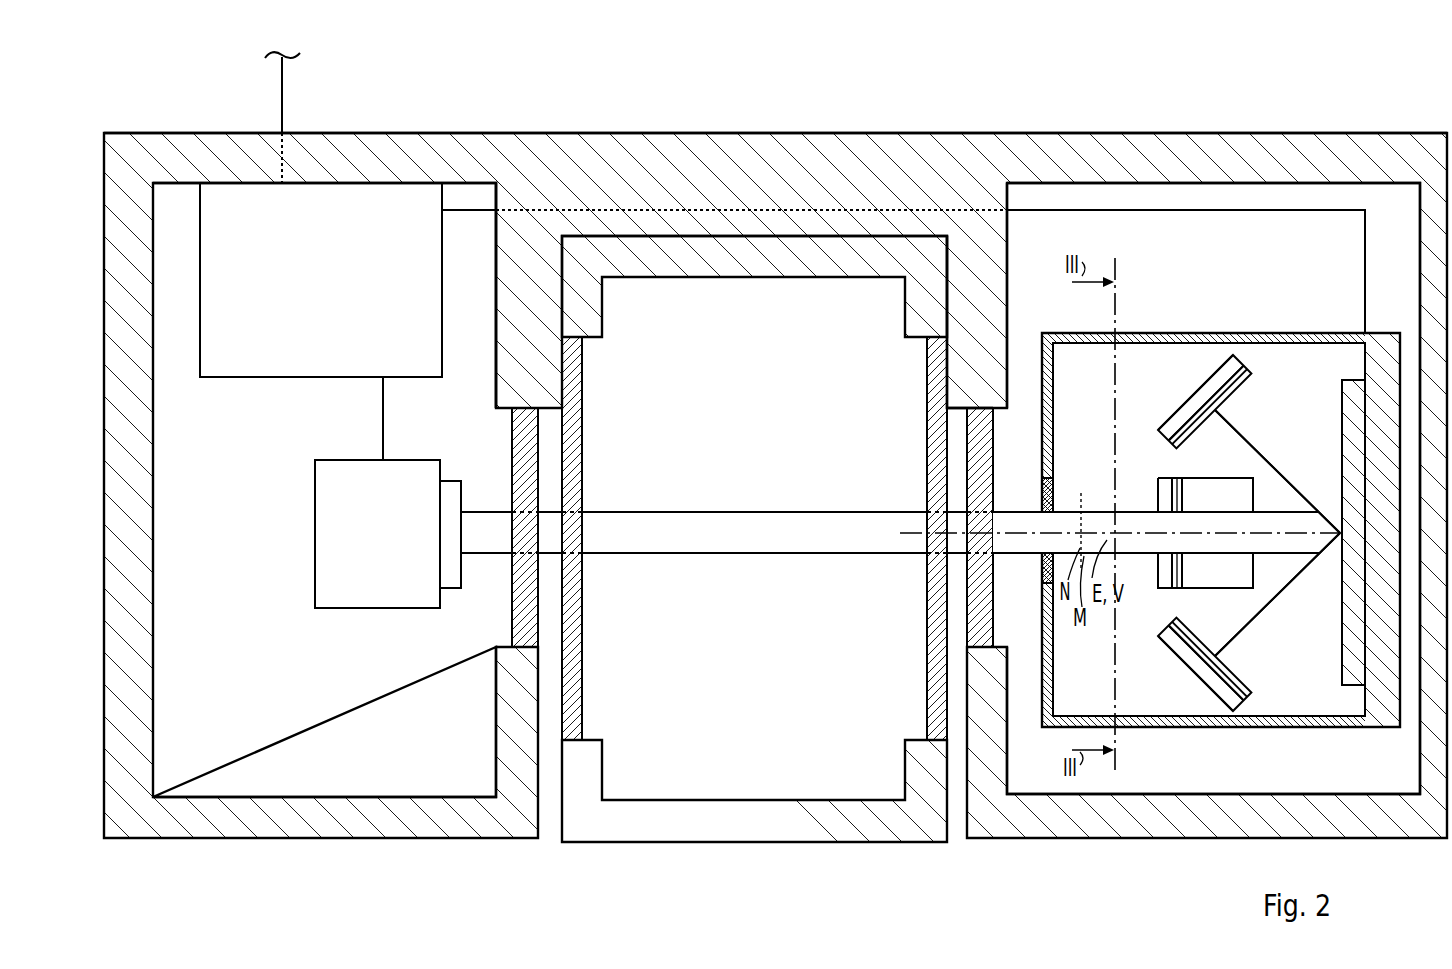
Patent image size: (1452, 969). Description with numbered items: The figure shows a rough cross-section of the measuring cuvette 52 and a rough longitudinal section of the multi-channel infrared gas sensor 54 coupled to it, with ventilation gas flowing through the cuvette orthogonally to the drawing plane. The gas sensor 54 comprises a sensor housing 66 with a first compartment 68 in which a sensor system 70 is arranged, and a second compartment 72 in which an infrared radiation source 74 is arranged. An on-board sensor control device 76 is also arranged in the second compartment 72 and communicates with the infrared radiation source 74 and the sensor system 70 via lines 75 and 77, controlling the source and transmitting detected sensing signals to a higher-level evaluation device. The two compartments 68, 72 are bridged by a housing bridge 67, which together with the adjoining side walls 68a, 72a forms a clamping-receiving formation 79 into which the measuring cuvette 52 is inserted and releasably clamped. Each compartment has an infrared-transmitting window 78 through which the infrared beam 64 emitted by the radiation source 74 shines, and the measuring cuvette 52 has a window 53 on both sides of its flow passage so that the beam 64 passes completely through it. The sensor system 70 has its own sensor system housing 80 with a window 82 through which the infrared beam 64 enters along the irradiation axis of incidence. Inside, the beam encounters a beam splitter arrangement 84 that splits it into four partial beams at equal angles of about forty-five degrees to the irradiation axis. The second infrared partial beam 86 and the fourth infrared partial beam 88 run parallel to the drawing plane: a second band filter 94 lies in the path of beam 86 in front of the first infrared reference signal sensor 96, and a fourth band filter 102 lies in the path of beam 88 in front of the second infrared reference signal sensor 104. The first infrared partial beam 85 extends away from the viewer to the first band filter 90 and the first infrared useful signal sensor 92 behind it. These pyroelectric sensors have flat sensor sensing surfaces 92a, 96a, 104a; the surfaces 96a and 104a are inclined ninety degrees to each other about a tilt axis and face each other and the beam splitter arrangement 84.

The measuring cuvette 52 is at (726, 484).
The window 53 is at (572, 433).
The multi-channel infrared gas sensor 54 is at (388, 92).
The infrared beam 64 is at (803, 525).
The sensor housing 66 is at (484, 125).
The housing bridge 67 is at (766, 150).
The first compartment 68 is at (1216, 780).
The side wall 68a is at (992, 290).
The sensor system 70 is at (1190, 318).
The second compartment 72 is at (333, 780).
The side wall 72a is at (507, 305).
The infrared radiation source 74 is at (389, 549).
The line 75 is at (383, 420).
The sensor control device 76 is at (333, 284).
The line 77 is at (467, 212).
The infrared-transmitting window 78 is at (517, 442).
The clamping-receiving formation 79 is at (708, 265).
The sensor system housing 80 is at (1050, 502).
The window 82 is at (1050, 496).
The beam splitter arrangement 84 is at (1355, 384).
The first infrared partial beam 85 is at (1268, 532).
The second infrared partial beam 86 is at (1270, 458).
The fourth infrared partial beam 88 is at (1272, 603).
The first band filter 90 is at (1215, 495).
The first infrared useful signal sensor 92 is at (1176, 506).
The sensor sensing surface 92a is at (1175, 507).
The second band filter 94 is at (1253, 380).
The first infrared reference signal sensor 96 is at (1174, 422).
The sensor sensing surface 96a is at (1182, 451).
The fourth band filter 102 is at (1250, 685).
The second infrared reference signal sensor 104 is at (1187, 647).
The sensor sensing surface 104a is at (1175, 617).